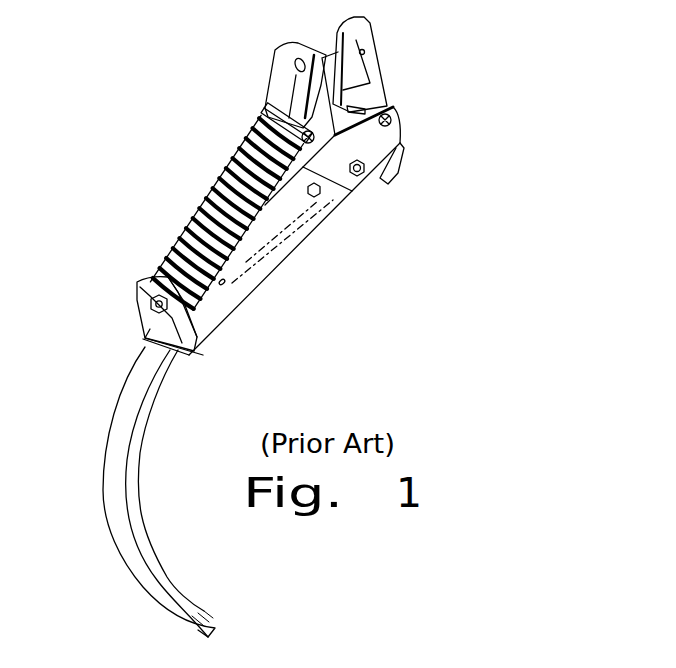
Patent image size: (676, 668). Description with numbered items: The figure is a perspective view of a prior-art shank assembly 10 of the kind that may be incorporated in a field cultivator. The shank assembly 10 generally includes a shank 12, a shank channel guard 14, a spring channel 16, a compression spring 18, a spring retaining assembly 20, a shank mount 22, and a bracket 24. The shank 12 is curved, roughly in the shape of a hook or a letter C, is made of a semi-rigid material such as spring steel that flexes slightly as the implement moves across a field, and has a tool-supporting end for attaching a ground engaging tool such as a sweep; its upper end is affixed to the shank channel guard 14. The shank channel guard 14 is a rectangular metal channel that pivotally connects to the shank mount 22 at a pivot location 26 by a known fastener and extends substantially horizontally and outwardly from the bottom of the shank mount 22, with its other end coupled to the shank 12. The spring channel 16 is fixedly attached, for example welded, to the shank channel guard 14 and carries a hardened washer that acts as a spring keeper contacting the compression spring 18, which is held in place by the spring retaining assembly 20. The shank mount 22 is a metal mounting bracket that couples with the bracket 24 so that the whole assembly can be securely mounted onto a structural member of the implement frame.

The shank assembly 10 is at (170, 172).
The shank 12 is at (120, 540).
The shank channel guard 14 is at (217, 327).
The spring channel 16 is at (143, 311).
The compression spring 18 is at (177, 243).
The spring retaining assembly 20 is at (230, 150).
The shank mount 22 is at (372, 143).
The bracket 24 is at (363, 40).
The pivot location 26 is at (362, 178).